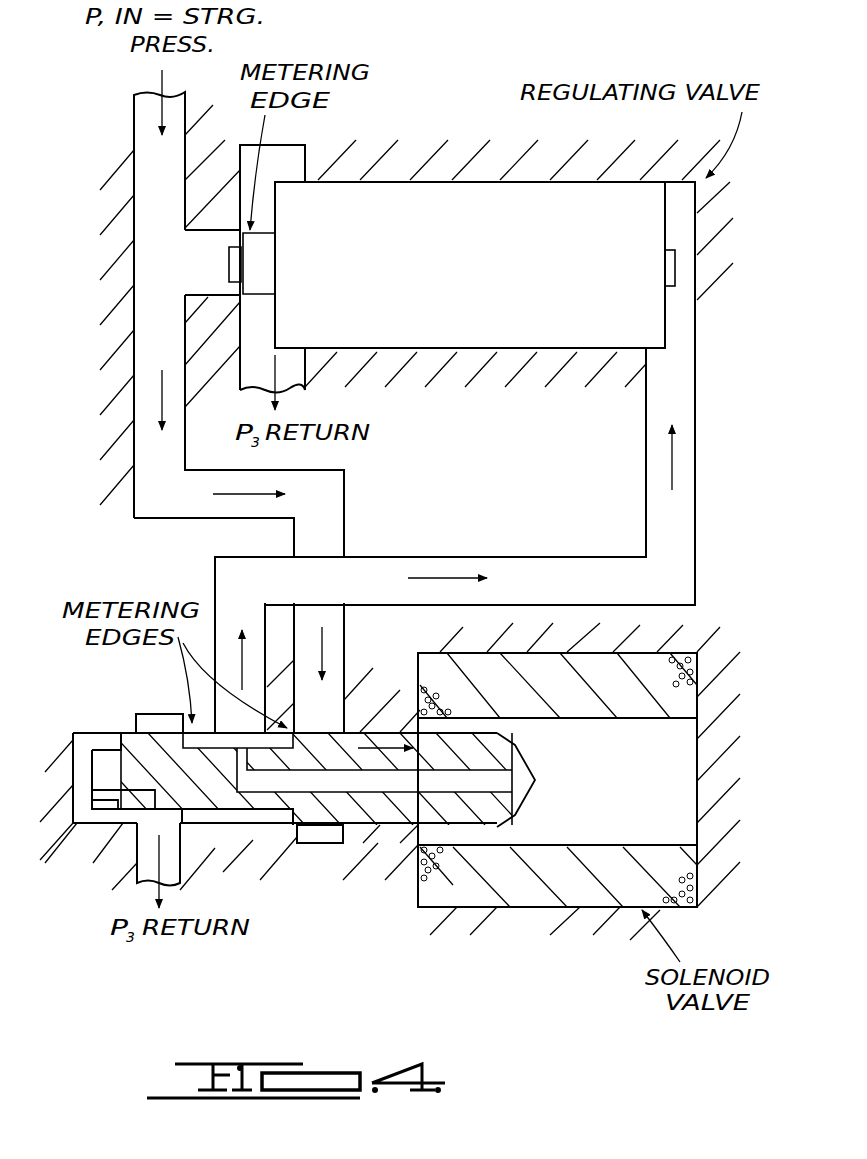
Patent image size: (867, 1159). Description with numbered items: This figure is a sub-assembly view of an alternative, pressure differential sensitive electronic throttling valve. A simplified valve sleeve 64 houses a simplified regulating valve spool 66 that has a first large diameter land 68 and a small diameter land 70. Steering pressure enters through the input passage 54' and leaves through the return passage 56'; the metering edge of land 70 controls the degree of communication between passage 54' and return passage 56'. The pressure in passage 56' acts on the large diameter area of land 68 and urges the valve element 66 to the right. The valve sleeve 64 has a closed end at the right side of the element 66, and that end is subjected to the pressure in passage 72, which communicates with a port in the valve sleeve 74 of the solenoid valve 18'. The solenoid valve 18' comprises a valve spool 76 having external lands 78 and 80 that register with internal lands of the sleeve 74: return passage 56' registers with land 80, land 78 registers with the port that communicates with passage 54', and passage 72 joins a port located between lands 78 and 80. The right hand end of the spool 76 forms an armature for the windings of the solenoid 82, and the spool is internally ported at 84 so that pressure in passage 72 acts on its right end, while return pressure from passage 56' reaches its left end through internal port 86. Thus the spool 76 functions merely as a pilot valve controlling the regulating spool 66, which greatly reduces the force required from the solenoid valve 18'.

The input passage 54' is at (232, 412).
The passage 72 is at (240, 230).
The first large diameter land 68 is at (293, 180).
The small diameter land 70 is at (263, 227).
The valve sleeve 64 is at (447, 160).
The valve spool 66 is at (508, 273).
The return passage 56' is at (263, 610).
The external land 78 is at (318, 730).
The external land 80 is at (143, 733).
The valve spool 76 is at (378, 830).
The valve sleeve 74 is at (273, 823).
The internal port 84 is at (473, 785).
The internal port 86 is at (110, 795).
The solenoid valve 18' is at (598, 816).
The solenoid 82 is at (545, 893).